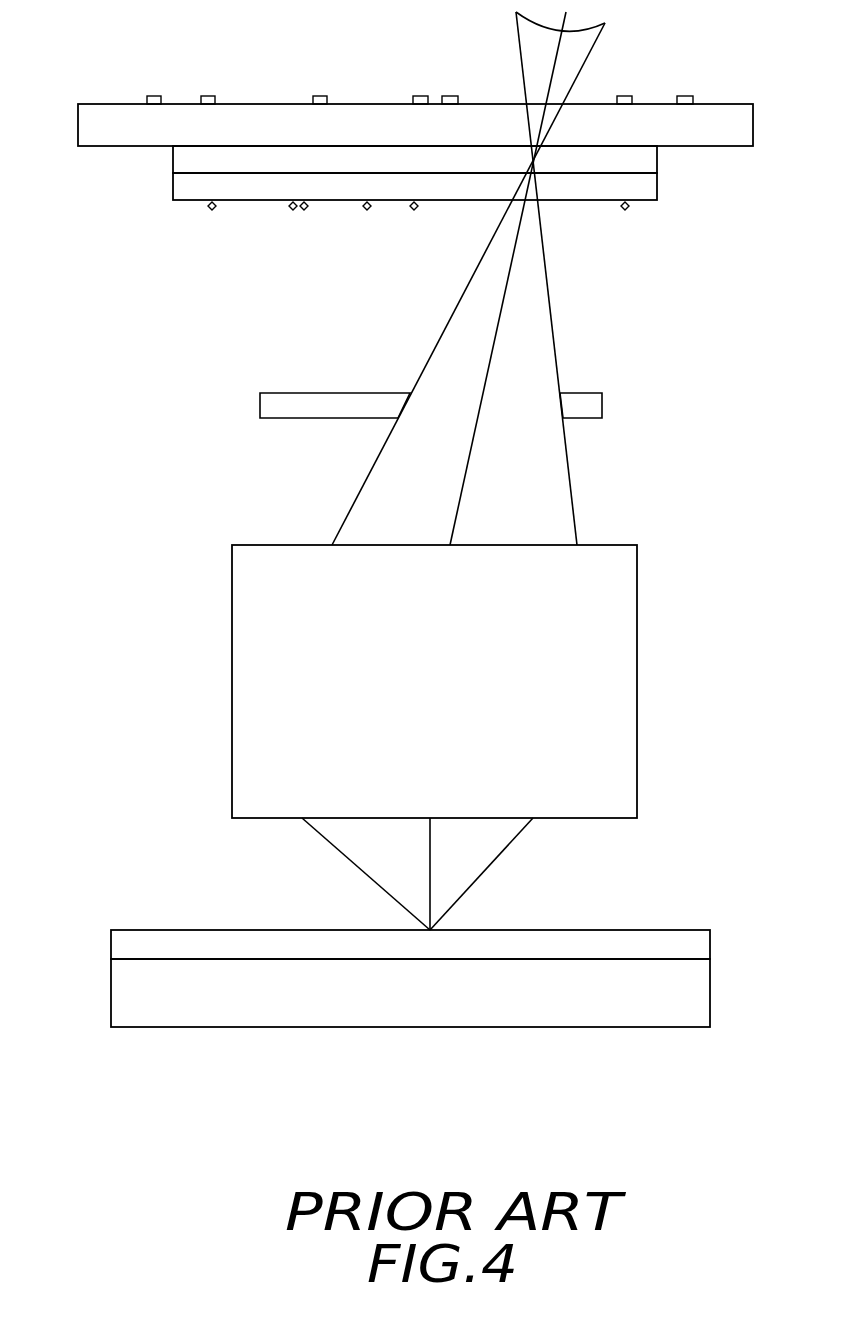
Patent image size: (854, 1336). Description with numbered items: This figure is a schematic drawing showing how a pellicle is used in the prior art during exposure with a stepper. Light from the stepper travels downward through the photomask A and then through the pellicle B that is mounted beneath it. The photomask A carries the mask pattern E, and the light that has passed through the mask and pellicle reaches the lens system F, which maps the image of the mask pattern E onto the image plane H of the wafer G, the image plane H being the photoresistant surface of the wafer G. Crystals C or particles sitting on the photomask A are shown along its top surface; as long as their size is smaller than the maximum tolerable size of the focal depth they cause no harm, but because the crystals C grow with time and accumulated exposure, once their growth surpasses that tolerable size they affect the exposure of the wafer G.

The photomask A is at (105, 117).
The pellicle B is at (642, 187).
The crystals C is at (423, 97).
The mask pattern E is at (183, 158).
The lens system F is at (260, 598).
The wafer G is at (157, 1012).
The image plane H is at (167, 935).